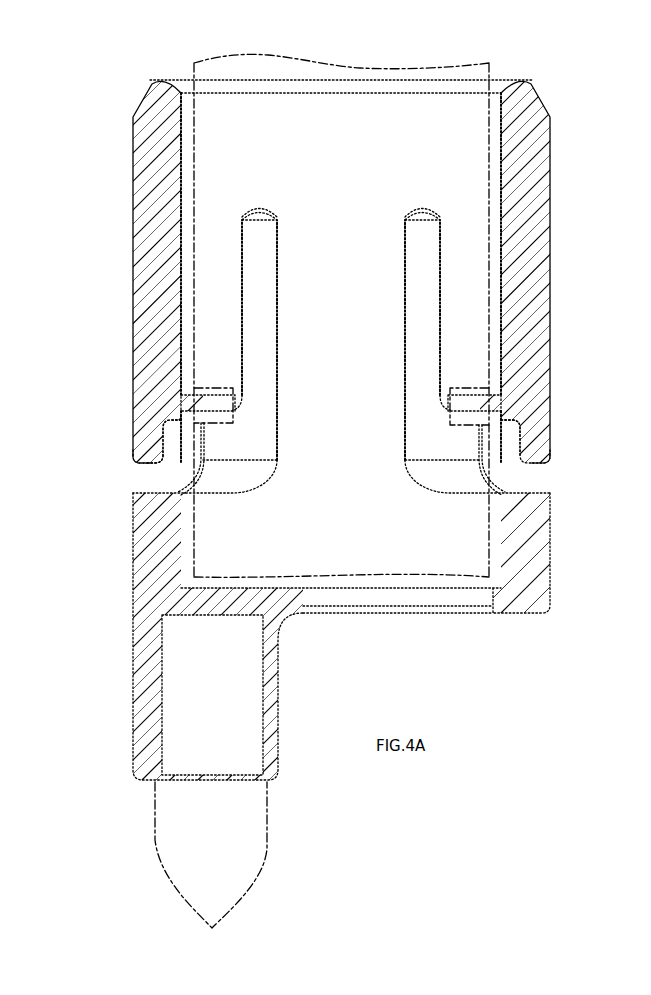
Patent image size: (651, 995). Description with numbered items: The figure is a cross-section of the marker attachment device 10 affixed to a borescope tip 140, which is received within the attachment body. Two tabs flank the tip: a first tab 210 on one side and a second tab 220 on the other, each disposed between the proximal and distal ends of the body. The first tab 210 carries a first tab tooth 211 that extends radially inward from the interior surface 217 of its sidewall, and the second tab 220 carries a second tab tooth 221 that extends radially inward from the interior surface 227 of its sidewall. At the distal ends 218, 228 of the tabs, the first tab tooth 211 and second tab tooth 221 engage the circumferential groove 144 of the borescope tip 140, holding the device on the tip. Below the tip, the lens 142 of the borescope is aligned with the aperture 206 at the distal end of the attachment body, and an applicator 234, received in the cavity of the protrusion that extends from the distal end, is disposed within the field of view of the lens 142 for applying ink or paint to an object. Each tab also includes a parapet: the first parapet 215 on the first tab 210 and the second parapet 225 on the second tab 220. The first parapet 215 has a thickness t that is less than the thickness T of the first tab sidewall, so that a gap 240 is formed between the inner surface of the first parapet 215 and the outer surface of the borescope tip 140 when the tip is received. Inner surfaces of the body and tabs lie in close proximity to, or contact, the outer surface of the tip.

The electrical connector 10 is at (108, 87).
The borescope tip 140 is at (477, 63).
The lens 142 is at (393, 578).
The circumferential groove 144 is at (476, 392).
The aperture 206 is at (463, 604).
The first tab 210 is at (133, 257).
The first tab tooth 211 is at (195, 394).
The first parapet 215 is at (160, 424).
The interior surface 217 is at (181, 187).
The distal end of the first tab 218 is at (137, 463).
The second tab 220 is at (552, 232).
The second tab tooth 221 is at (490, 398).
The second parapet 225 is at (542, 430).
The interior surface 227 is at (498, 157).
The distal end of the second tab 228 is at (540, 459).
The applicator 234 is at (267, 846).
The gap 240 is at (168, 457).
The thickness of the first tab sidewall T is at (181, 303).
The thickness of the first parapet t is at (213, 442).